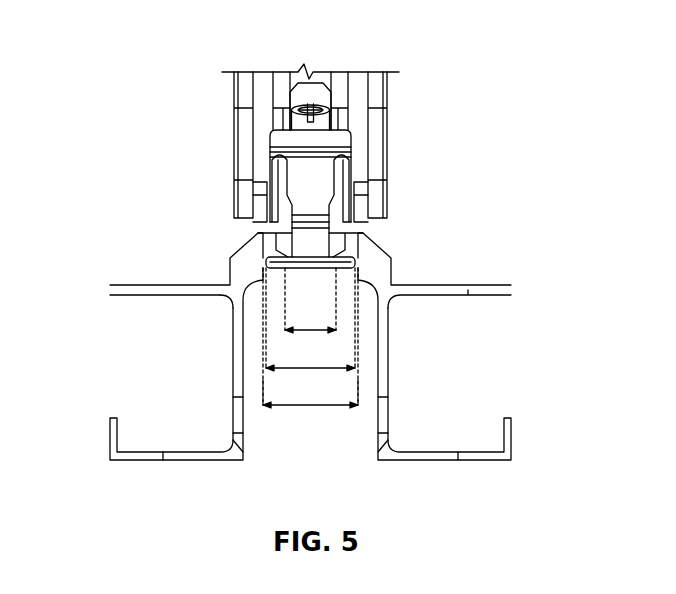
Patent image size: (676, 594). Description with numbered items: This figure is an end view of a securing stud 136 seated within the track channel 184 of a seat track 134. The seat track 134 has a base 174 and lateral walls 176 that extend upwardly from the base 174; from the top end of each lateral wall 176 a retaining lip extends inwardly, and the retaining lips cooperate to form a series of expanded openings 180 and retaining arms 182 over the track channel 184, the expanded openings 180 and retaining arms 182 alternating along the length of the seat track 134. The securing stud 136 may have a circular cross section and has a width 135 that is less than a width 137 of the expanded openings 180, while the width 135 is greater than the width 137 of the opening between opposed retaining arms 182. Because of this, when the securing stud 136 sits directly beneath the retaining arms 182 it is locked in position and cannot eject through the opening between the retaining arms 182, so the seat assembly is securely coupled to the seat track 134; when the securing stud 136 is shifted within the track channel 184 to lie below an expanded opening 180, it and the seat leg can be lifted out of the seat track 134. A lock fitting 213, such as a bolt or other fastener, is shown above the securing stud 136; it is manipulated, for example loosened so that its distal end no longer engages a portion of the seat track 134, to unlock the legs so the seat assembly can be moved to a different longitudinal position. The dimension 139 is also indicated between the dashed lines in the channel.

The lock fitting 213 is at (333, 110).
The expanded opening 180 is at (296, 252).
The retaining arm 182 is at (281, 241).
The track channel 184 is at (354, 242).
The lateral wall 176 is at (247, 248).
The seat track 134 is at (214, 308).
The base 174 is at (477, 298).
The securing stud 136 is at (310, 331).
The pocket inner width 139 is at (310, 369).
The width of securing stud 135 is at (310, 406).
The width of expanded opening 137 is at (312, 407).